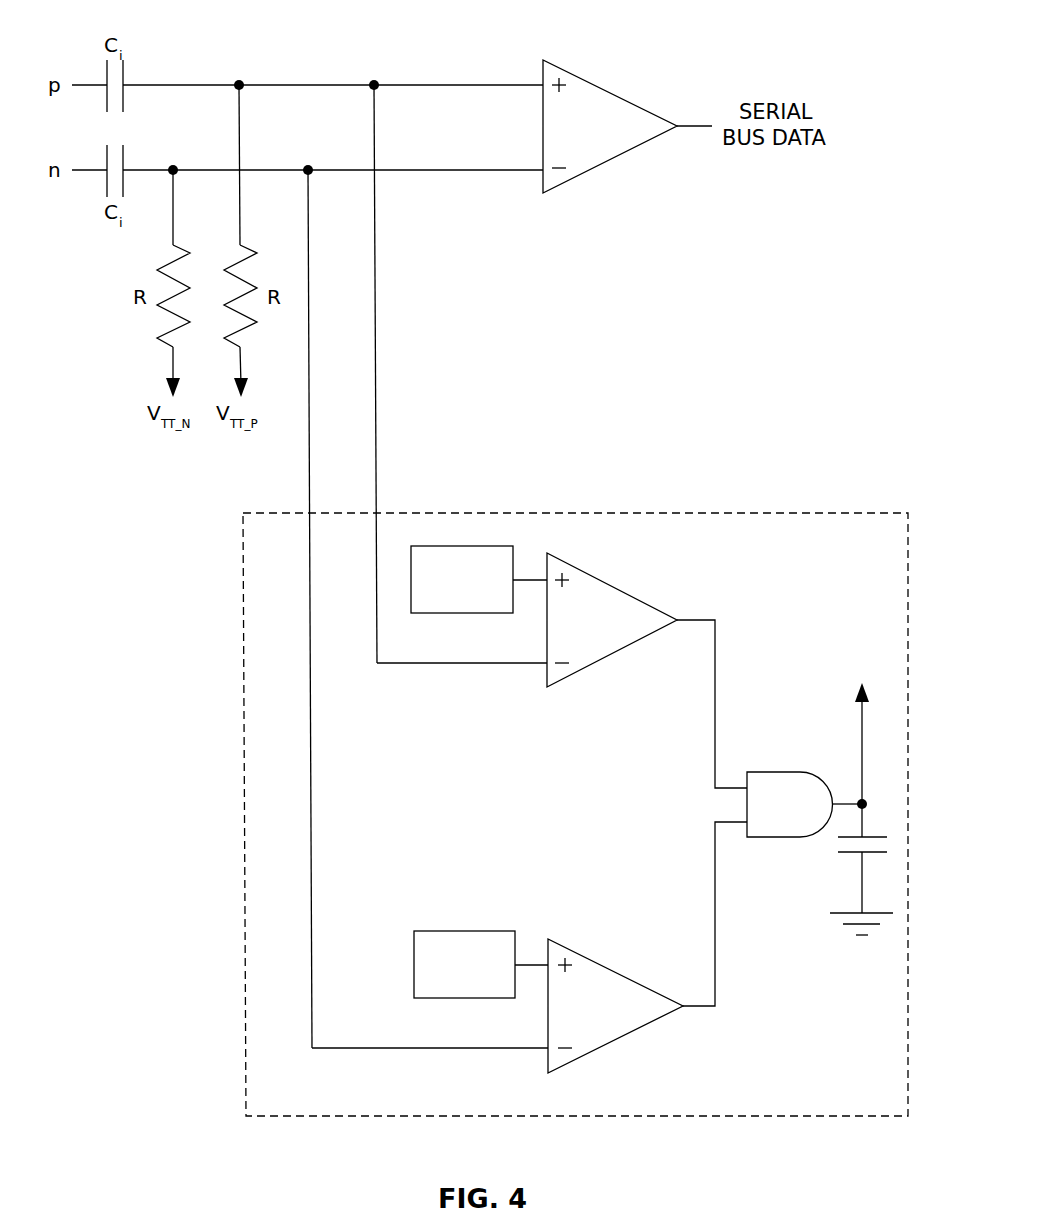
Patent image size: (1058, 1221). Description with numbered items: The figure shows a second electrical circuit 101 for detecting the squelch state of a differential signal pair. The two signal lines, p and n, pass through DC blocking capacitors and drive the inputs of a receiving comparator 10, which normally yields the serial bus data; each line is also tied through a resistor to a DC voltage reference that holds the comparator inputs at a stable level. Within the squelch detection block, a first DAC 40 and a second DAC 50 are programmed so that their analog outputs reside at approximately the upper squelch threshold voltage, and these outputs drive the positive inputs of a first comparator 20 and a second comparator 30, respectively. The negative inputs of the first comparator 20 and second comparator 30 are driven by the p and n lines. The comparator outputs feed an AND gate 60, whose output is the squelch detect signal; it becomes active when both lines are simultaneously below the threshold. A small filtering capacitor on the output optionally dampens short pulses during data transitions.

The receiving comparator 10 is at (610, 90).
The first comparator 20 is at (647, 595).
The second comparator 30 is at (615, 970).
The first DAC 40 is at (460, 613).
The second DAC 50 is at (414, 947).
The AND gate 60 is at (764, 772).
The second electrical circuit 101 is at (512, 513).